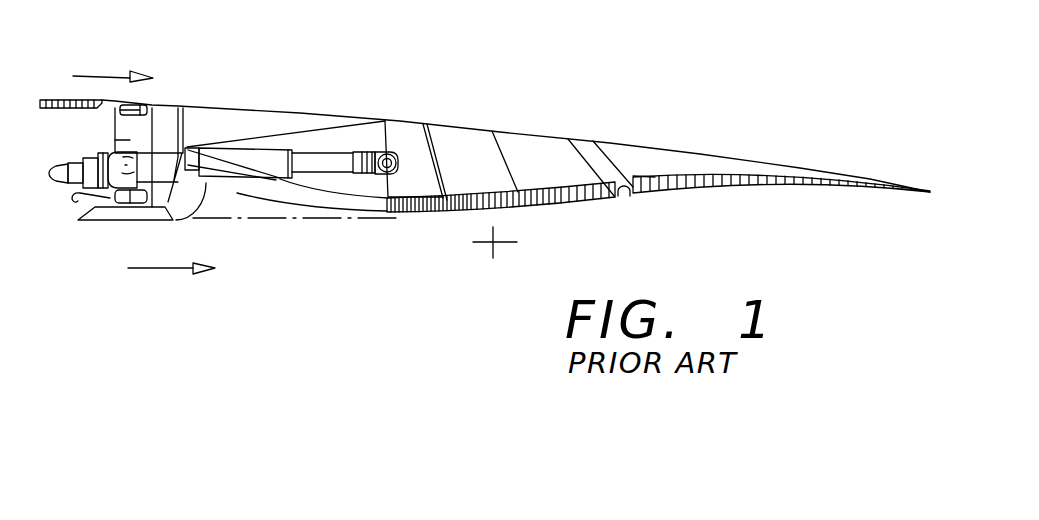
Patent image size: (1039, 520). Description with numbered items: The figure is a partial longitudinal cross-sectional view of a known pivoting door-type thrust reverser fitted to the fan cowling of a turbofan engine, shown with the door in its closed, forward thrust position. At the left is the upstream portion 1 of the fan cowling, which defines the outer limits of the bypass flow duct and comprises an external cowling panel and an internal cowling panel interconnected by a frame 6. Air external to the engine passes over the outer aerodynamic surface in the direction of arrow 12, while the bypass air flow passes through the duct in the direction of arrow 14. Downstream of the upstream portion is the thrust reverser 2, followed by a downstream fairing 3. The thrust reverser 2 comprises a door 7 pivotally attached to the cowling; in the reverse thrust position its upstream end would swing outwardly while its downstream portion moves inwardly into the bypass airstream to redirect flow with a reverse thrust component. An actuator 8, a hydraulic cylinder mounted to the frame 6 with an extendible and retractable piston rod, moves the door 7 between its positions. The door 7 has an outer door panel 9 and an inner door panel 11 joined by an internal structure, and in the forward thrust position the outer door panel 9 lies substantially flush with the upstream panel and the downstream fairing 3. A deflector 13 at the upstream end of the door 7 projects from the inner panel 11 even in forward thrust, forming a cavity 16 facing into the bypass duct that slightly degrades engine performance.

The upstream portion of the fan cowling 1 is at (65, 100).
The thrust reverser 2 is at (433, 112).
The downstream fairing 3 is at (781, 170).
The frame 6 is at (133, 199).
The thrust reverser door 7 is at (315, 127).
The actuator 8 is at (268, 158).
The outer door panel 9 is at (362, 122).
The inner door panel 11 is at (543, 212).
The arrow indicating external air flow direction 12 is at (118, 74).
The deflector 13 is at (162, 192).
The arrow indicating bypass air flow direction 14 is at (167, 269).
The cavity 16 is at (247, 193).